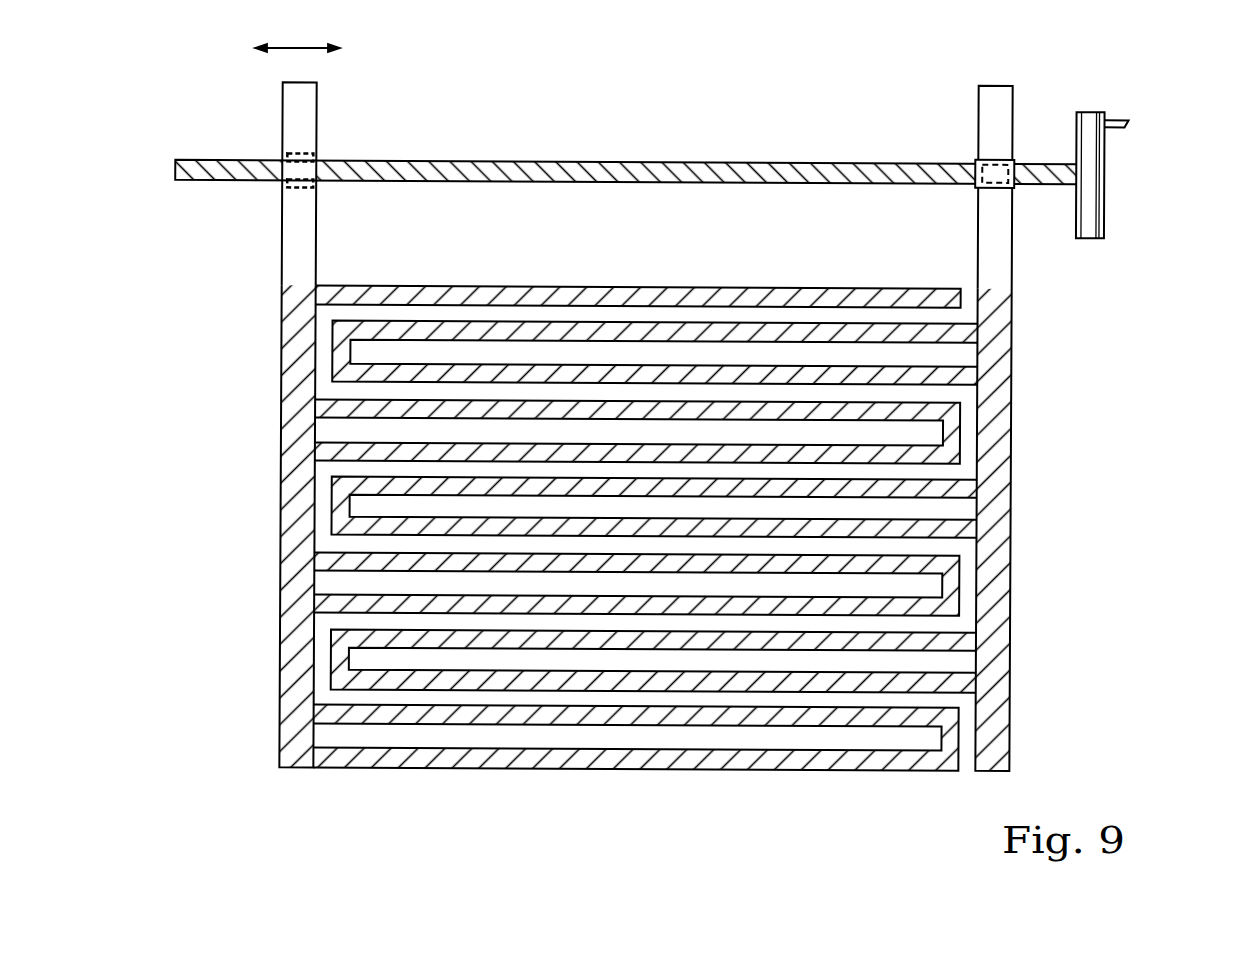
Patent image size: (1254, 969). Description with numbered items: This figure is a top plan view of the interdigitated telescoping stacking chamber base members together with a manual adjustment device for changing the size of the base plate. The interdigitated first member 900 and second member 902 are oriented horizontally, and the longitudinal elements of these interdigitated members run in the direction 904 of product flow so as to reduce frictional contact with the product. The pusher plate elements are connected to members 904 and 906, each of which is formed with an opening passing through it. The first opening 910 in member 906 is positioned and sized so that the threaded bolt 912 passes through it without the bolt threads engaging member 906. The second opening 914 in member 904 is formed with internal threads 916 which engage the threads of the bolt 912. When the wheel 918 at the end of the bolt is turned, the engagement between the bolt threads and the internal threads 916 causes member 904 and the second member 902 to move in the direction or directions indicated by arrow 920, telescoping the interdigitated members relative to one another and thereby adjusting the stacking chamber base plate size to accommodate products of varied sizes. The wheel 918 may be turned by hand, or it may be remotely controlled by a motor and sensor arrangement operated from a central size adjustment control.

The first member 900 is at (1010, 670).
The second member 902 is at (279, 698).
The member 904 is at (281, 242).
The member 906 is at (1012, 255).
The first opening 910 is at (975, 162).
The threaded bolt 912 is at (607, 162).
The second opening 914 is at (300, 188).
The internal threads 916 is at (300, 154).
The wheel 918 is at (1105, 185).
The arrow 920 is at (297, 31).